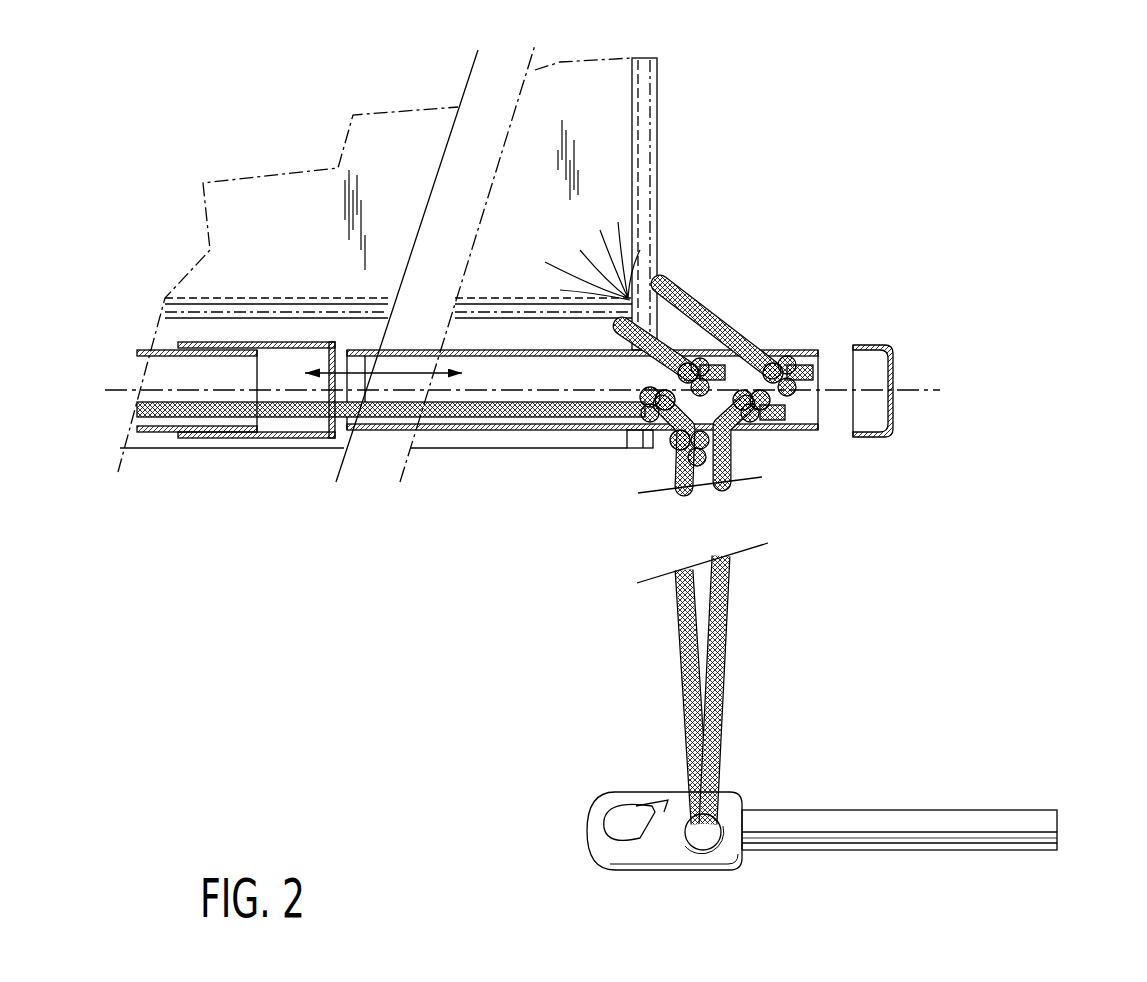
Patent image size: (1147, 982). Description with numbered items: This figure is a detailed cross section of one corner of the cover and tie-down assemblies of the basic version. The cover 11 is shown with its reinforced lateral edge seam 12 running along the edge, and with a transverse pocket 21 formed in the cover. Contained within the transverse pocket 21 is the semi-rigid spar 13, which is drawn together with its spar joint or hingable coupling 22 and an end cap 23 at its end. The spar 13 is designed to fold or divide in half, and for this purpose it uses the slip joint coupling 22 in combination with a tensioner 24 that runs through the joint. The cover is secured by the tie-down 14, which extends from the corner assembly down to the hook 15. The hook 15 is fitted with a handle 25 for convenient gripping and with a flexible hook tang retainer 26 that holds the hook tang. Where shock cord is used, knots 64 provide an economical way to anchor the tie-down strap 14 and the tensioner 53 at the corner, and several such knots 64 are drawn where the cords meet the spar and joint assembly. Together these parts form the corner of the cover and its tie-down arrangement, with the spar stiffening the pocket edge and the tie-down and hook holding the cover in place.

The cover 11 is at (351, 263).
The reinforced lateral edge seam 12 is at (746, 251).
The semi-rigid spar 13 is at (686, 346).
The tie-down 14 is at (763, 614).
The hook 15 is at (597, 779).
The transverse pocket 21 is at (357, 269).
The slip joint coupling 22 is at (236, 473).
The end cap 23 is at (968, 420).
The tensioner 24 is at (391, 502).
The handle 25 is at (899, 772).
The flexible hook tang retainer 26 is at (593, 764).
The tensioner 53 is at (772, 268).
The knots 64 is at (675, 446).